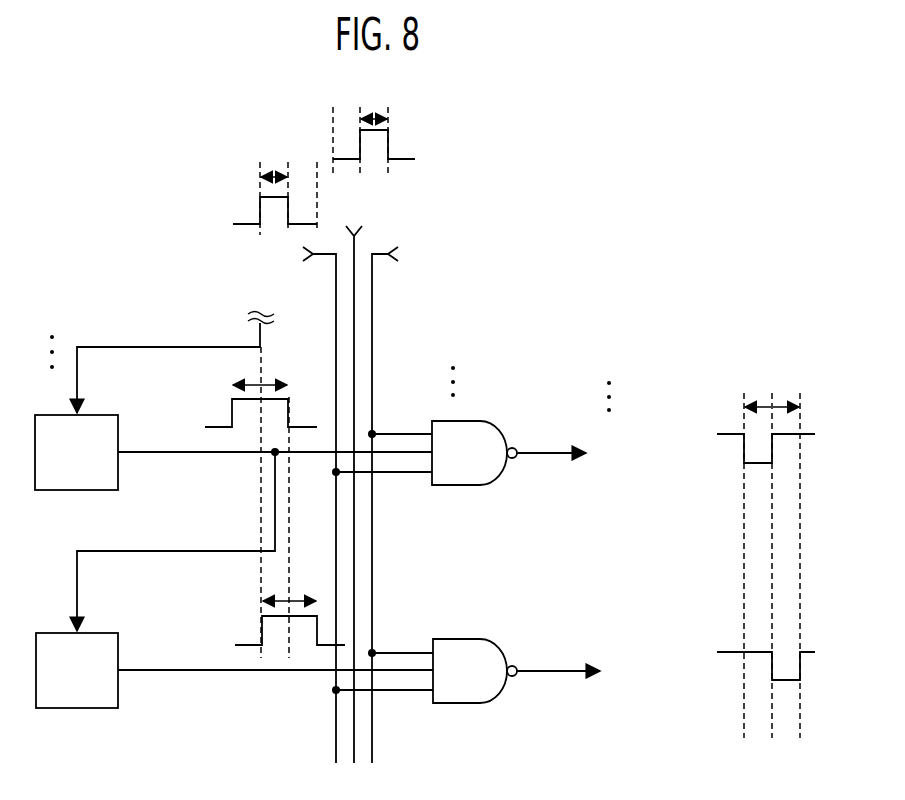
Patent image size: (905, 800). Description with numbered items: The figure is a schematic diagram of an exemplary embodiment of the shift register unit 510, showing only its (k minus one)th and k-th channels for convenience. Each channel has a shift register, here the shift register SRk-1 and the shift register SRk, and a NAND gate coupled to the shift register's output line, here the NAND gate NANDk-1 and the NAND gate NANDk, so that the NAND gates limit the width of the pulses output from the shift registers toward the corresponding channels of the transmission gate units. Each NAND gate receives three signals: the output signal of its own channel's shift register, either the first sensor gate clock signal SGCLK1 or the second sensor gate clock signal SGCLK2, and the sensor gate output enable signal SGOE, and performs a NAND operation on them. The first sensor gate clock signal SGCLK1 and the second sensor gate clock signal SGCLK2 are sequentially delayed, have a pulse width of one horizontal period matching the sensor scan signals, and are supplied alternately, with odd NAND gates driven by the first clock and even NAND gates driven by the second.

The shift register unit 510 is at (566, 191).
The first sensor gate clock signal SGCLK1 is at (284, 448).
The second sensor gate clock signal SGCLK2 is at (370, 423).
The sensor gate output enable signal SGOE is at (411, 503).
The shift register of the (k-1)th channel SRk-1 is at (233, 472).
The shift register of the k-th channel SRk is at (234, 670).
The NAND gate of the (k-1)th channel NANDk-1 is at (430, 472).
The NAND gate of the k-th channel NANDk is at (426, 690).